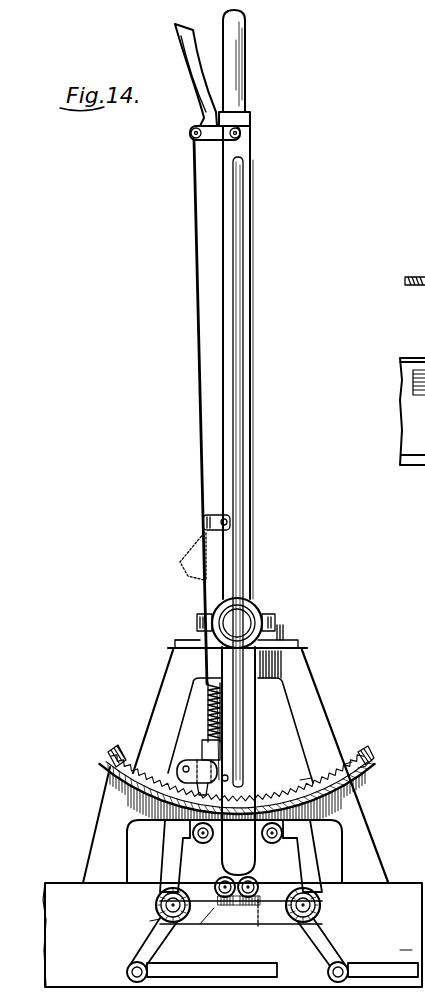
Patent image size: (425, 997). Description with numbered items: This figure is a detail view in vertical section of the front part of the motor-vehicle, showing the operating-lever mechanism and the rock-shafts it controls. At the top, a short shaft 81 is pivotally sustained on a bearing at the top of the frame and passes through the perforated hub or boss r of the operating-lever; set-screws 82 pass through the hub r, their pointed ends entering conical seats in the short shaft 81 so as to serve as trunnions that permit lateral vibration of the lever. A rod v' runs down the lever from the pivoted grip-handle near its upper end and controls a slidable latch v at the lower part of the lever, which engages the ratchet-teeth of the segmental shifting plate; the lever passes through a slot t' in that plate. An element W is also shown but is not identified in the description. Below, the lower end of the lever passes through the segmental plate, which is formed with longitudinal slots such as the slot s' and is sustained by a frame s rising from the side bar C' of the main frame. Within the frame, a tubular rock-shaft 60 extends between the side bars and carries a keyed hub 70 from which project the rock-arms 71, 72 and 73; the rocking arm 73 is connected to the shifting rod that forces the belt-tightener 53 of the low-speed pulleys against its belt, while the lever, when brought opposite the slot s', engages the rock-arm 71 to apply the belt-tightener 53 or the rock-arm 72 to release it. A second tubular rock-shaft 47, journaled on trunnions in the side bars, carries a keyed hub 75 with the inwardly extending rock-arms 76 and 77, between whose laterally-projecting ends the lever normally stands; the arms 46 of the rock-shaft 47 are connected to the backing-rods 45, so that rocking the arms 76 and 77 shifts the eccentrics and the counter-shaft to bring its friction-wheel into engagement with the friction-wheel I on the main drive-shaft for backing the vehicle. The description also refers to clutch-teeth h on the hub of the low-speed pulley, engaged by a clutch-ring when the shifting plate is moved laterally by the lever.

The clutch-teeth h is at (252, 306).
The rod v' is at (194, 460).
The weight (dotted) W is at (176, 568).
The short shaft 81 is at (258, 614).
The set-screws 82 is at (200, 620).
The hub or boss r is at (190, 636).
The slidable latch v is at (202, 739).
The slot t' is at (325, 737).
The friction-wheel I is at (350, 763).
The longitudinal slot s' is at (375, 771).
The frame s is at (235, 754).
The rock-arm 76 is at (182, 857).
The rock-arm 71 is at (312, 856).
The rock-shaft 47 is at (157, 905).
The rock-shaft 60 is at (321, 904).
The hub 70 is at (322, 914).
The rock-arm 72 is at (268, 921).
The rock-arm 77 is at (205, 922).
The hub 75 is at (150, 921).
The arms 46 is at (146, 944).
The rocking arm 73 is at (330, 944).
The backing-rods 45 is at (217, 958).
The side bar C' is at (232, 935).
The belt-tightener 53 is at (400, 954).